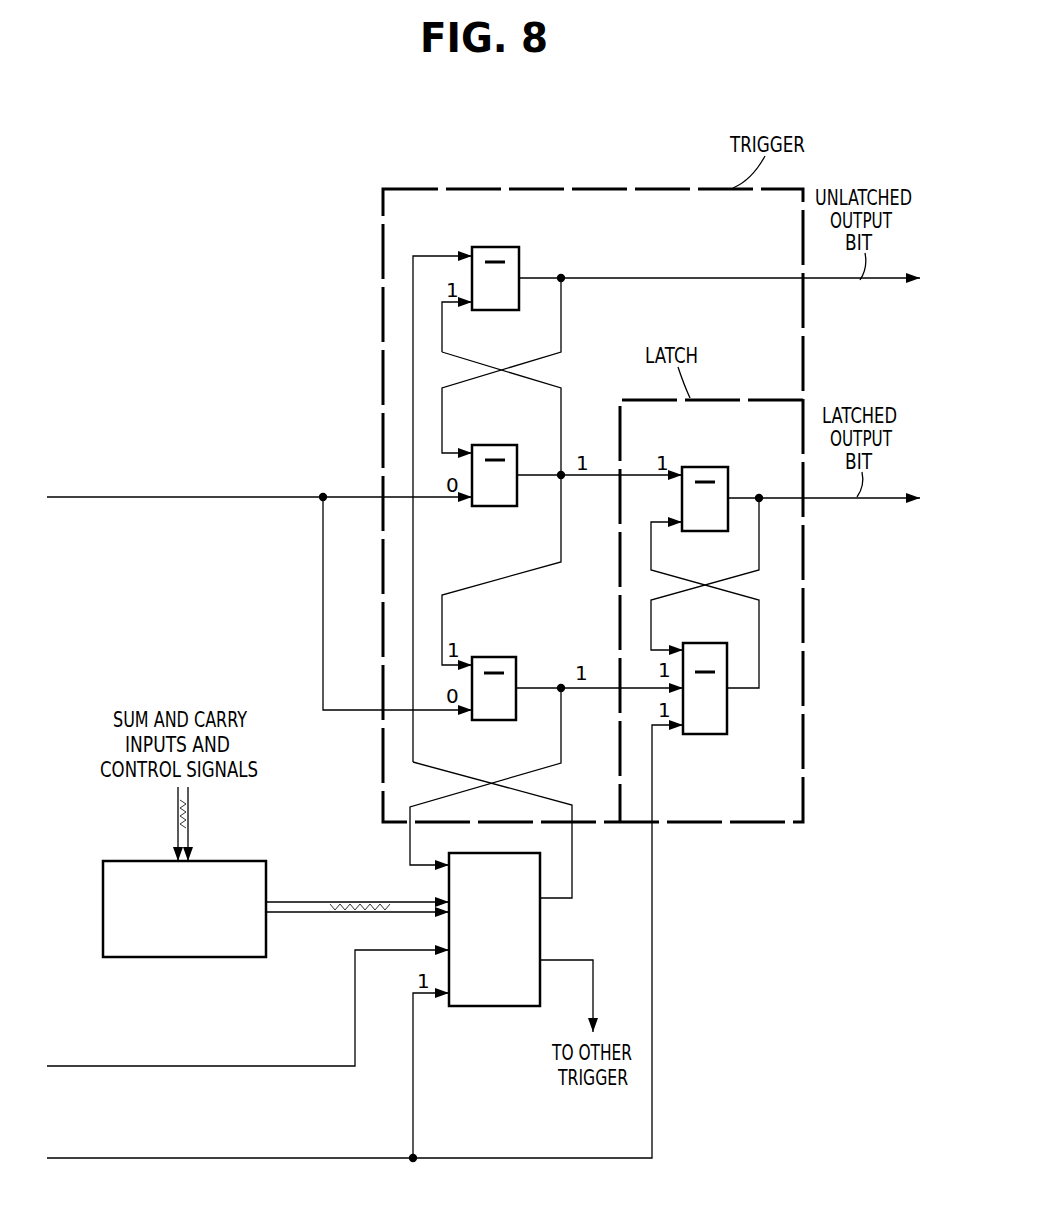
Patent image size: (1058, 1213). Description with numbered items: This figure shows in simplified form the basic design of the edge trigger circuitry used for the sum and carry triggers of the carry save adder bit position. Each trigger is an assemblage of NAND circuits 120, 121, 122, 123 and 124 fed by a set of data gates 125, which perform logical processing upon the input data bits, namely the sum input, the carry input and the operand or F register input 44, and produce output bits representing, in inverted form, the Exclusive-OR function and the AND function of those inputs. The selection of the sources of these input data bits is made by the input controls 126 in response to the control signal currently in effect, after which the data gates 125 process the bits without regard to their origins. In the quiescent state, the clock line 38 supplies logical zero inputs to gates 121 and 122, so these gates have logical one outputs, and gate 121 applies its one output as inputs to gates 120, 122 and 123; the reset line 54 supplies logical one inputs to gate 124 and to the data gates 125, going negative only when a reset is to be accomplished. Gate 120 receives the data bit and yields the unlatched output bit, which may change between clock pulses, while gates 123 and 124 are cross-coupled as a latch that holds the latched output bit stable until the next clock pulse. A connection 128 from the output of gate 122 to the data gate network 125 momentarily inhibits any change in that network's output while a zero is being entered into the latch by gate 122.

The clock line 38 is at (80, 496).
The F register input line 44 is at (78, 1065).
The reset line 54 is at (78, 1157).
The NAND gate 120 is at (495, 246).
The NAND gate 121 is at (495, 444).
The NAND gate 122 is at (497, 656).
The NAND gate 123 is at (705, 466).
The NAND gate 124 is at (710, 735).
The data gates 125 is at (494, 1007).
The input controls 126 is at (103, 907).
The connection 128 is at (412, 851).